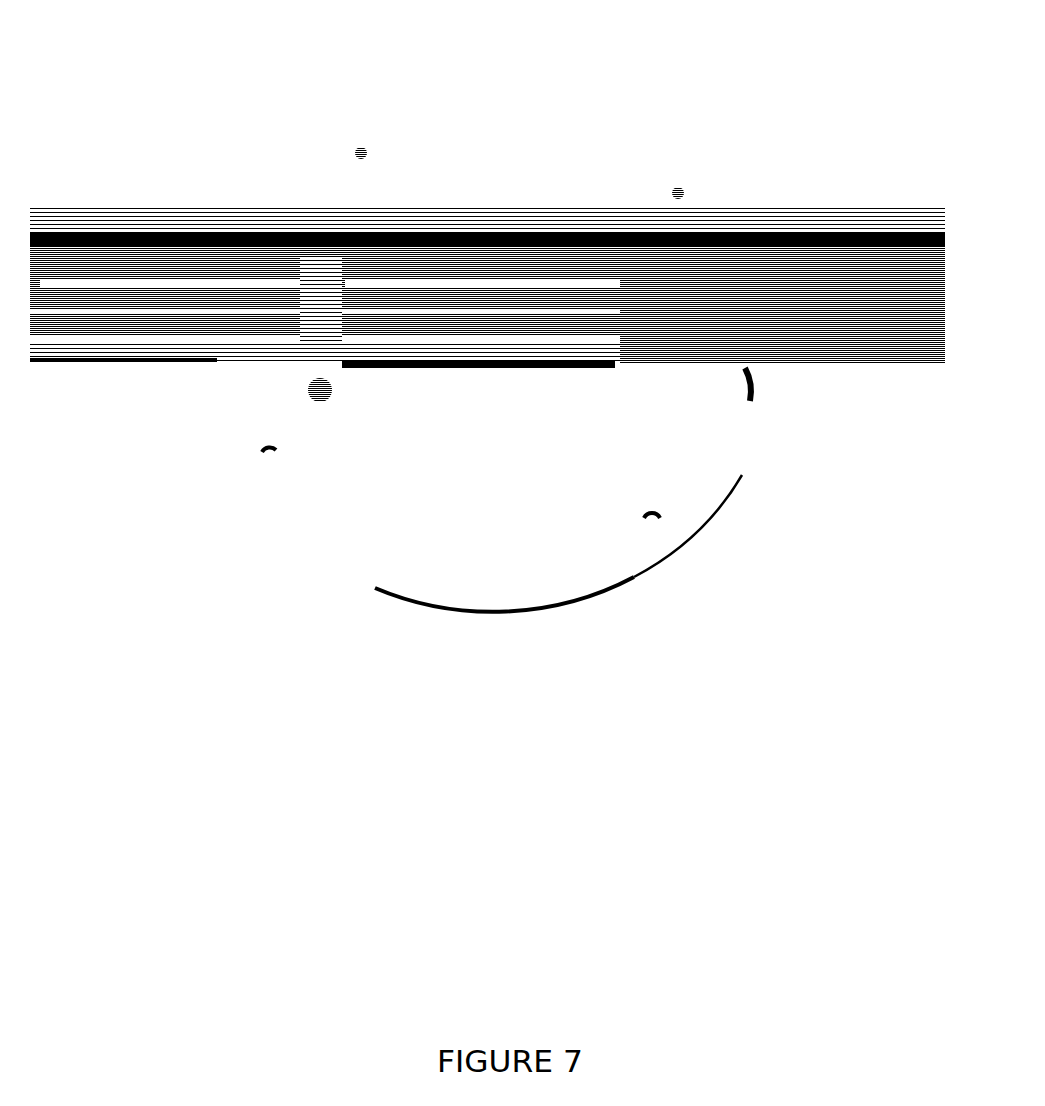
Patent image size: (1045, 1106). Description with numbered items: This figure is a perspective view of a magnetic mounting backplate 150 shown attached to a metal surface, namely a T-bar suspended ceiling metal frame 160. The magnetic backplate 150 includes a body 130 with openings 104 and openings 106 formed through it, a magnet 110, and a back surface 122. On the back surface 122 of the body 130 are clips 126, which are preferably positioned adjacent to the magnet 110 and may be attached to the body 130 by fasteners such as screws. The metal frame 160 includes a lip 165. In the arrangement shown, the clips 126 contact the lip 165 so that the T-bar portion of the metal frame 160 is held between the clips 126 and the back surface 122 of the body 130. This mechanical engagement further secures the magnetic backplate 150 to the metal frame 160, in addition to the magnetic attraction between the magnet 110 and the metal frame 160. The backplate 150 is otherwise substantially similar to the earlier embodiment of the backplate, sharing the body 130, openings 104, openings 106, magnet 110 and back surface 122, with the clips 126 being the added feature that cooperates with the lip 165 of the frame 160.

The openings 104 is at (335, 473).
The openings 106 is at (270, 467).
The magnet 110 is at (488, 370).
The back surface 122 is at (518, 583).
The clips 126 is at (300, 358).
The body 130 is at (430, 602).
The magnetic mounting backplate 150 is at (487, 405).
The T-bar suspended ceiling metal frame 160 is at (660, 362).
The lip 165 is at (271, 335).